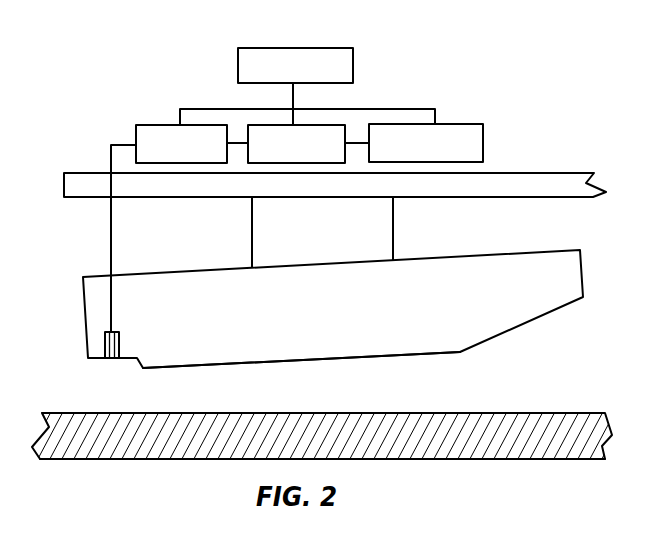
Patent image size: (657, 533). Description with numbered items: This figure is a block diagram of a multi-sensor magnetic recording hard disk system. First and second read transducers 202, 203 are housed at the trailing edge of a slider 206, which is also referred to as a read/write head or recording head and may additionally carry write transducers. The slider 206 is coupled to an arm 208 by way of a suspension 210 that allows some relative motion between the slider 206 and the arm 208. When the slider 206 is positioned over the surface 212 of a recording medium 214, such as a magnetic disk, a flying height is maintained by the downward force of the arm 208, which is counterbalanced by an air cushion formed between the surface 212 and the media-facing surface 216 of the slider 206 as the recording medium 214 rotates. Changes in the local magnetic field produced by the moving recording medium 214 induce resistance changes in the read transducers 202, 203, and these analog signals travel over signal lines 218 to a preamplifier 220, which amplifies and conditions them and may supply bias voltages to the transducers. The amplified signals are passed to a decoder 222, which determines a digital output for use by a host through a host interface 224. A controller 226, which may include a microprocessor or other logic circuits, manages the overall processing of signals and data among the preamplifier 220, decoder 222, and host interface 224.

The first read transducer 202 is at (105, 360).
The second read transducer 203 is at (115, 360).
The slider 206 is at (498, 260).
The arm 208 is at (540, 178).
The suspension 210 is at (394, 226).
The surface 212 is at (499, 414).
The recording medium 214 is at (476, 448).
The media-facing surface 216 is at (351, 353).
The signal lines 218 is at (108, 228).
The preamplifier 220 is at (150, 124).
The decoder 222 is at (268, 125).
The host interface 224 is at (453, 124).
The controller 226 is at (271, 48).